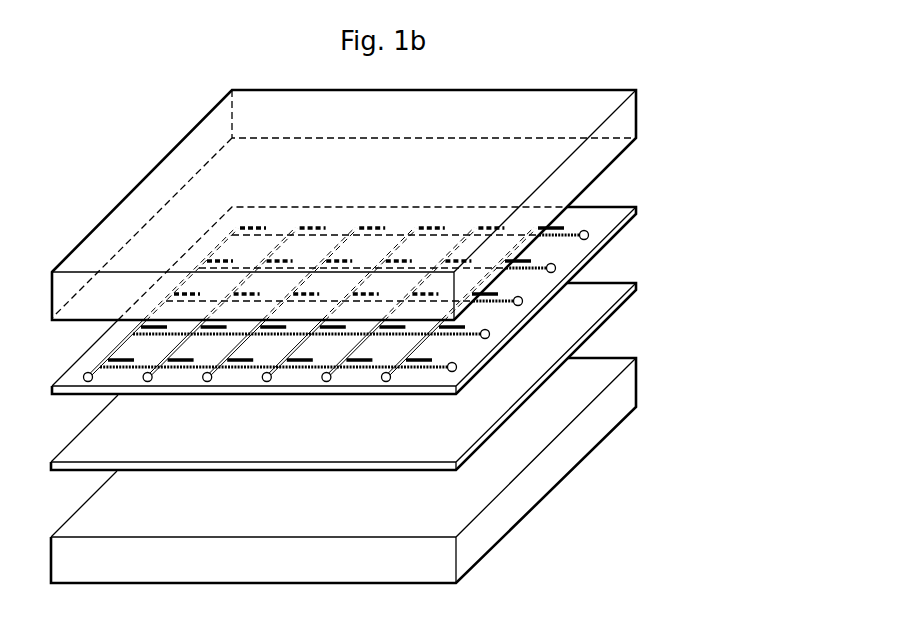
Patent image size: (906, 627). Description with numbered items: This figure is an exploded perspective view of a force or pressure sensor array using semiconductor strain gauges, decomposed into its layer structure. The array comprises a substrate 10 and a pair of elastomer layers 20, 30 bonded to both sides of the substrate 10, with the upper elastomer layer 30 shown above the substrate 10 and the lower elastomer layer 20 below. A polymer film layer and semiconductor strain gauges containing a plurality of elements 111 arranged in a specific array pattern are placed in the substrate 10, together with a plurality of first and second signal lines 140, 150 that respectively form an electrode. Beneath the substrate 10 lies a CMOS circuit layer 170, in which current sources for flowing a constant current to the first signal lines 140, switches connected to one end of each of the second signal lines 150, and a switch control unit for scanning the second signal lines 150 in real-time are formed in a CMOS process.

The elastomer layer 30 is at (635, 123).
The substrate 10 is at (628, 203).
The CMOS circuit layer 170 is at (628, 277).
The elastomer layer 20 is at (630, 382).
The first signal lines 140 is at (152, 380).
The second signal lines 150 is at (256, 362).
The elements 111 is at (358, 366).